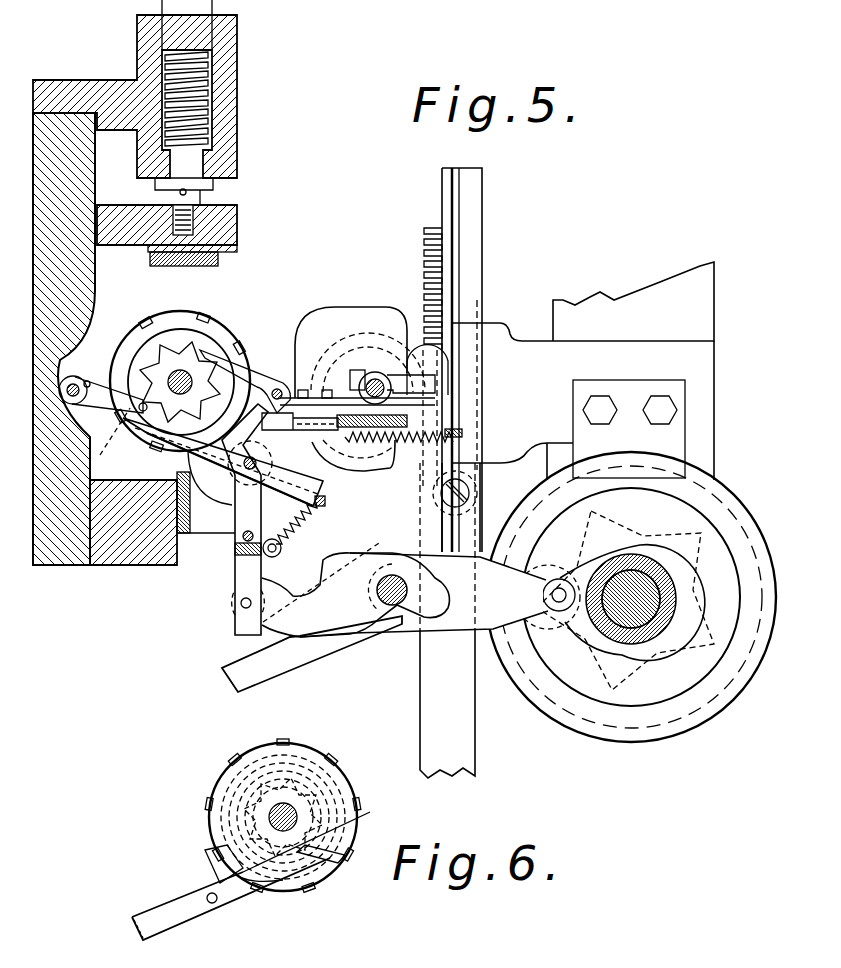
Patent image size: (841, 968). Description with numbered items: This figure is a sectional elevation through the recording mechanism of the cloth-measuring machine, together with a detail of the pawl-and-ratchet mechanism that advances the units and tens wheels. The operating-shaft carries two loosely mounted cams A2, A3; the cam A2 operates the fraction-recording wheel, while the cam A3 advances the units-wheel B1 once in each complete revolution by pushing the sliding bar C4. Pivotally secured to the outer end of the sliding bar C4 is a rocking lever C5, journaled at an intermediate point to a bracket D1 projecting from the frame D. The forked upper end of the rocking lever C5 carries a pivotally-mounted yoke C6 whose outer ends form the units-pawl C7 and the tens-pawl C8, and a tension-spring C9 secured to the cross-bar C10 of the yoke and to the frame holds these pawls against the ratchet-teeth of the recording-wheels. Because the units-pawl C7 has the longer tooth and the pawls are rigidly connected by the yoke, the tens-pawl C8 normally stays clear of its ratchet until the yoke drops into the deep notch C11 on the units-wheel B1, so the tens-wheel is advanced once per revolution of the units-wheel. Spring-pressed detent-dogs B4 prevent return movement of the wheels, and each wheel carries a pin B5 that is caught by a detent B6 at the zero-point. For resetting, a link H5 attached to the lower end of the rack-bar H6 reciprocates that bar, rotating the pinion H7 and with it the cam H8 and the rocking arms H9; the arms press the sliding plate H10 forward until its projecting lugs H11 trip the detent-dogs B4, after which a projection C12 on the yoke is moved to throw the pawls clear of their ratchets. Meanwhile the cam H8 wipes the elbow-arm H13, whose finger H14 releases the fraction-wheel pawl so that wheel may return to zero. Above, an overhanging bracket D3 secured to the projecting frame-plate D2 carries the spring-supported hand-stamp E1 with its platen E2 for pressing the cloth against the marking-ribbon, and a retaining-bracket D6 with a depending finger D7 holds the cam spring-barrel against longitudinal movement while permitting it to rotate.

In FIG. 5, the frame D is at (583, 371).
In FIG. 5, the lever pivot pin D1 is at (397, 607).
In FIG. 5, the frame-plate D2 is at (90, 306).
In FIG. 5, the overhanging bracket D3 is at (108, 79).
In FIG. 5, the retaining-bracket D6 is at (631, 384).
In FIG. 5, the depending finger D7 is at (650, 424).
In FIG. 5, the hand-stamp E1 is at (200, 195).
In FIG. 5, the platen E2 is at (218, 260).
In FIG. 6, the units-wheel B1 is at (302, 757).
In FIG. 5, the detent-dogs B4 is at (268, 370).
In FIG. 5, the pin B5 is at (174, 389).
In FIG. 5, the detent B6 is at (99, 385).
In FIG. 5, the sliding bar C4 is at (363, 614).
In FIG. 5, the rocking lever C5 is at (233, 588).
In FIG. 6, the yoke C6 is at (185, 896).
In FIG. 6, the units-pawl C7 is at (297, 872).
In FIG. 5, the tens-pawl C8 is at (162, 438).
In FIG. 5, the tension-spring C9 is at (298, 540).
In FIG. 5, the cross-bar of the yoke C10 is at (327, 497).
In FIG. 6, the deep notch C11 is at (324, 835).
In FIG. 6, the projection on the yoke C12 is at (206, 858).
In FIG. 5, the link H5 is at (421, 728).
In FIG. 5, the rack-bar H6 is at (481, 256).
In FIG. 5, the pinion H7 is at (374, 333).
In FIG. 5, the cam H8 is at (330, 325).
In FIG. 5, the rocking arms H9 is at (437, 380).
In FIG. 5, the sliding plate H10 is at (413, 423).
In FIG. 5, the projecting lugs H11 is at (300, 428).
In FIG. 5, the elbow-arm H13 is at (449, 392).
In FIG. 5, the finger H14 is at (312, 654).
In FIG. 5, the cam A2 is at (662, 538).
In FIG. 5, the cam A3 is at (603, 652).